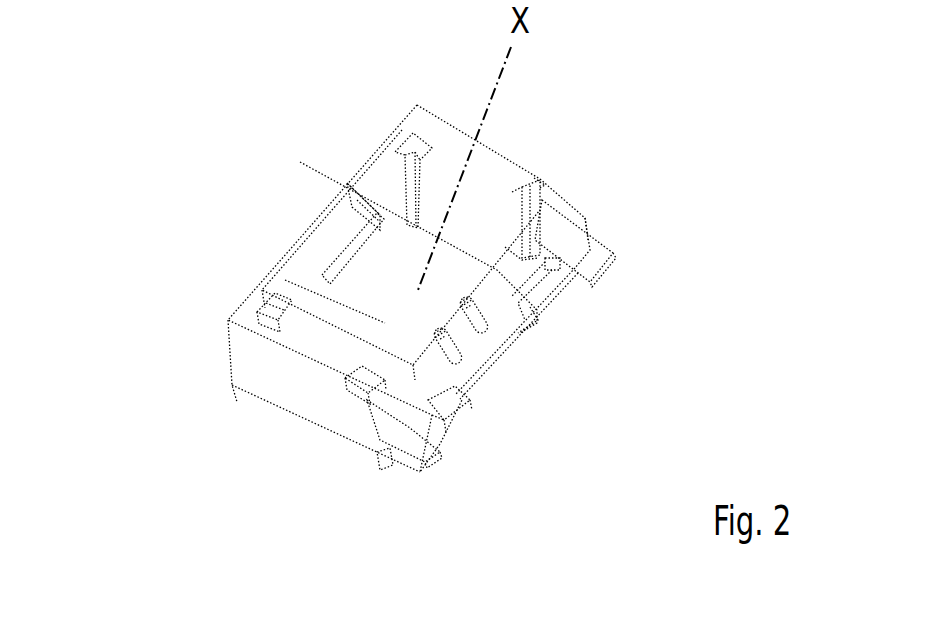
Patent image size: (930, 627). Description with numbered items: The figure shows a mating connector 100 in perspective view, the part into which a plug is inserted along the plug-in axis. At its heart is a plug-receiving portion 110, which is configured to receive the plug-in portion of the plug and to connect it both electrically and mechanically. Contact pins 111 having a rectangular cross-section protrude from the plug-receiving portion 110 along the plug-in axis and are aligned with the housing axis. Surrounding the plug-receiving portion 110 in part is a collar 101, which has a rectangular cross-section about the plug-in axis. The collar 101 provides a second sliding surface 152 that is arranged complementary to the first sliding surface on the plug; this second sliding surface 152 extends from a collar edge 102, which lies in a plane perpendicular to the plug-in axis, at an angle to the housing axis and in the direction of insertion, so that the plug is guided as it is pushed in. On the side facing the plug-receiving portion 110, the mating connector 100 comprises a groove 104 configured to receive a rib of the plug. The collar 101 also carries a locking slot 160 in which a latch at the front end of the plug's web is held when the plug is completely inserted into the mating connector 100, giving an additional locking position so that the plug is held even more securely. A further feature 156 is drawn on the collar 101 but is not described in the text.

The mating connector 100 is at (210, 194).
The collar 101 is at (280, 372).
The collar edge 102 is at (243, 318).
The groove 104 is at (523, 202).
The plug-receiving portion 110 is at (418, 293).
The contact pins 111 is at (457, 345).
The second sliding surface 152 is at (570, 228).
The protrusion 156 is at (392, 468).
The locking slot 160 is at (355, 243).